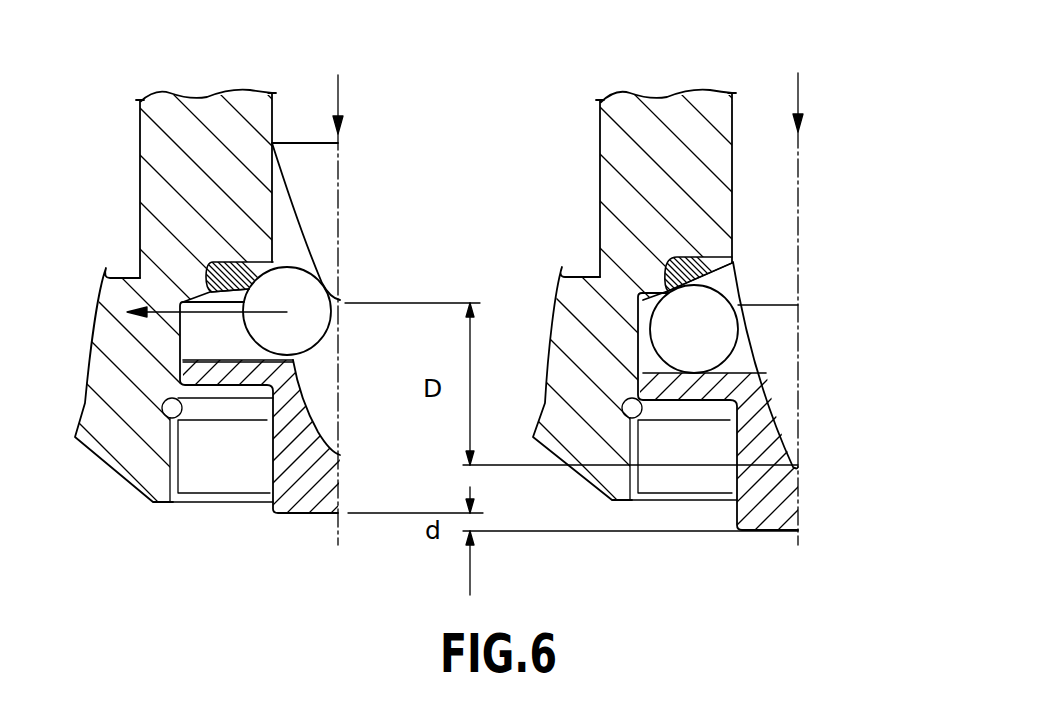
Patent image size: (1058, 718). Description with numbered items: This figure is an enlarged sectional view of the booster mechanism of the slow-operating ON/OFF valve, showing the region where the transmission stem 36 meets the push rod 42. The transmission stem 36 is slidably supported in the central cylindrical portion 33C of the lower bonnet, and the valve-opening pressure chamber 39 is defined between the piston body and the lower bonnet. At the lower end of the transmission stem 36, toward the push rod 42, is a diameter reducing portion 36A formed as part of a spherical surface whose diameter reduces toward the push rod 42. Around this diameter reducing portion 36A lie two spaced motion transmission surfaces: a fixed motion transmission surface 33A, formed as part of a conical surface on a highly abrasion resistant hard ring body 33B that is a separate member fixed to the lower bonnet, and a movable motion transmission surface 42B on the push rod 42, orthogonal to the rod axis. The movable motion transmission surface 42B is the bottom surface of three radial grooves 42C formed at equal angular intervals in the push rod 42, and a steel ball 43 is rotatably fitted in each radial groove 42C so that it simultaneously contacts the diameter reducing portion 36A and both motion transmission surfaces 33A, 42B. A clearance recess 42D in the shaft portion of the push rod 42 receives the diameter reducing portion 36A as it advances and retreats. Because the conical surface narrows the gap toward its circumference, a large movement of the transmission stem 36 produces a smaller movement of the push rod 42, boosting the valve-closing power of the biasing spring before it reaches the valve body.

The motion transmission surface 33A is at (230, 292).
The hard ring body 33B is at (247, 260).
The central cylindrical portion 33C is at (167, 117).
The transmission stem 36 is at (313, 98).
The diameter reducing portion 36A is at (320, 236).
The valve-opening pressure chamber 39 is at (124, 145).
The push rod 42 is at (323, 498).
The motion transmission surface 42B is at (229, 352).
The radial groove 42C is at (234, 475).
The clearance recess 42D is at (318, 432).
The steel ball 43 is at (262, 330).